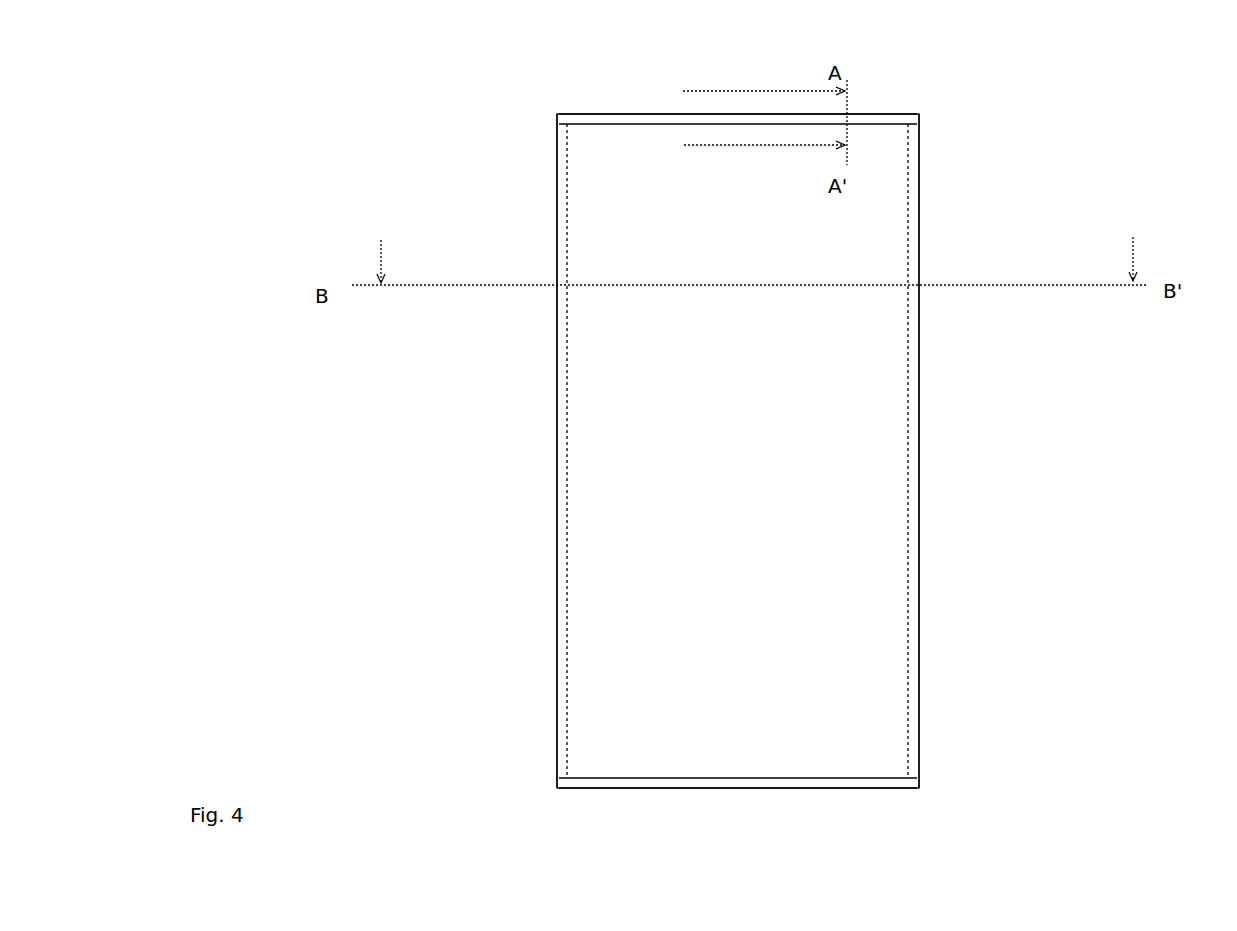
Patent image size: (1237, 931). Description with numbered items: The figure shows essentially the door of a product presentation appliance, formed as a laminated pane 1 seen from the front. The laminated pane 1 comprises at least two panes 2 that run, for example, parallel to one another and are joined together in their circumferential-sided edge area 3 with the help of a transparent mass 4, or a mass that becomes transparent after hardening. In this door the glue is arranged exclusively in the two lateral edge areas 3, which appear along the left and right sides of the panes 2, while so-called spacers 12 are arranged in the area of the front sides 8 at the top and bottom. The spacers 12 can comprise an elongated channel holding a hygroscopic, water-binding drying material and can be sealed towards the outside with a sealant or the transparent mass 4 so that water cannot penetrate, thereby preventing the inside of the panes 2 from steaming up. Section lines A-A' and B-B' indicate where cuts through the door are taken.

The laminated pane 1 is at (1157, 137).
The panes 2 is at (626, 520).
The edge area 3 is at (893, 643).
The transparent mass 4 is at (663, 451).
The front sides 8 is at (654, 93).
The spacers 12 is at (738, 451).